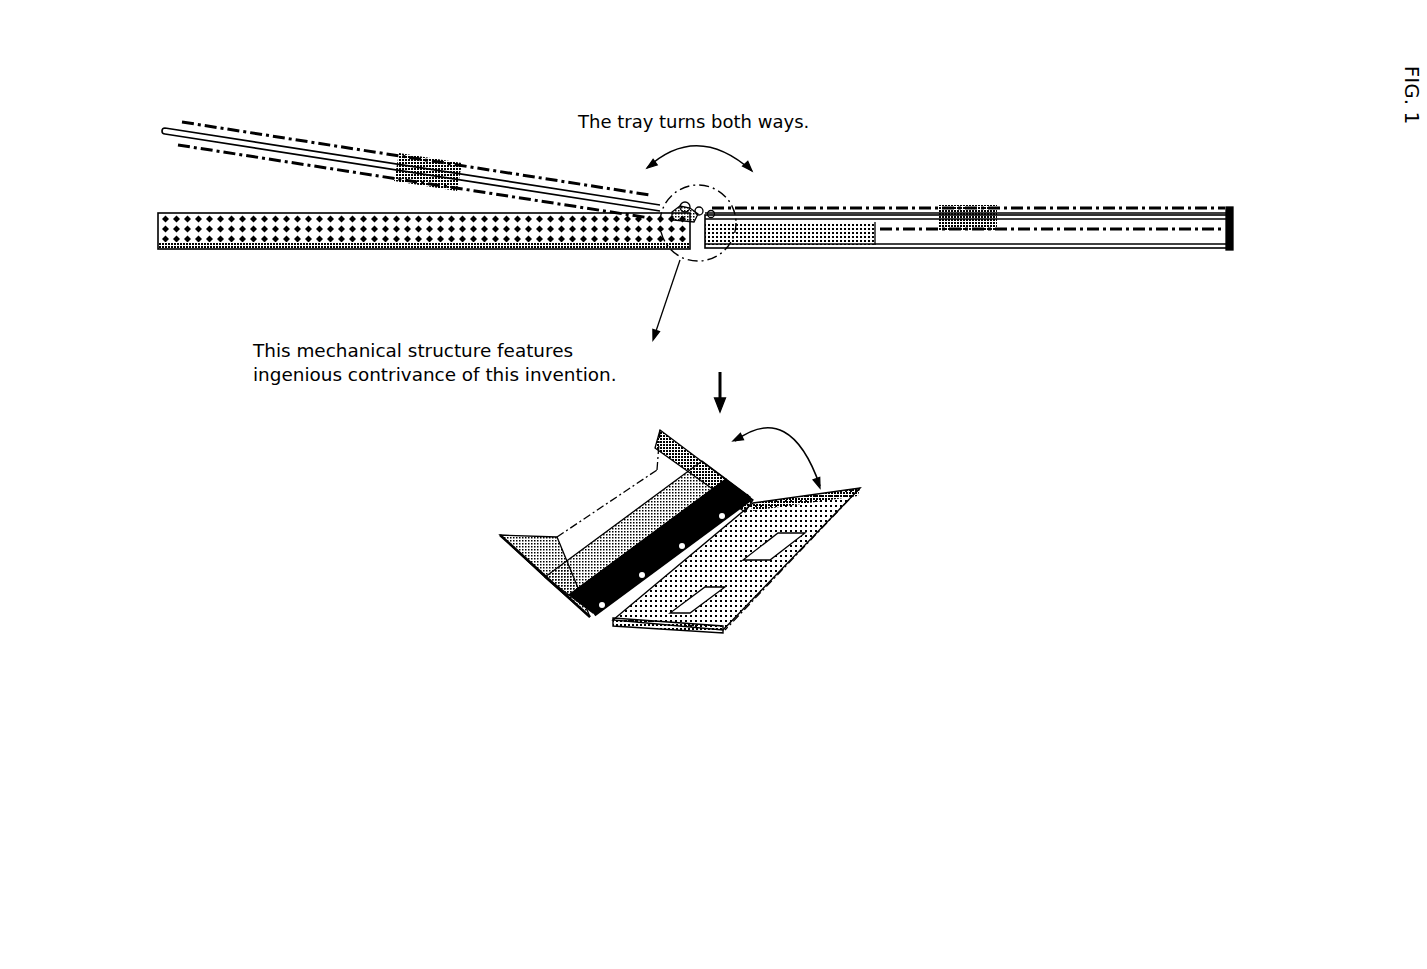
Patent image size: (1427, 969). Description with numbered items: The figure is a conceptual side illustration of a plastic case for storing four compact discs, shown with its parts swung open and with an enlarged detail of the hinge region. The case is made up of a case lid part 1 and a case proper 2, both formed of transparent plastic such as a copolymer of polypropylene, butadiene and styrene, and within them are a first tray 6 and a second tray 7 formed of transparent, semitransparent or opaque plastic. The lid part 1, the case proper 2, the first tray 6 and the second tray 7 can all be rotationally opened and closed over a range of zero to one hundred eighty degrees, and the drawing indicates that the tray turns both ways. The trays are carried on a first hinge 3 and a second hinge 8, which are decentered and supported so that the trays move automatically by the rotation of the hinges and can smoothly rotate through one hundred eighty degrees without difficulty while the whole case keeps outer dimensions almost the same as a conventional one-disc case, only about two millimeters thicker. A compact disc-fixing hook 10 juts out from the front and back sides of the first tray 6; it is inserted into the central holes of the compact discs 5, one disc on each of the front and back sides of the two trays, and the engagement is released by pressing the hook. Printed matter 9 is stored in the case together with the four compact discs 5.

The case lid part 1 is at (405, 276).
The case proper 2 is at (981, 277).
The first hinge 3 is at (593, 616).
The compact disc 5 is at (326, 138).
The first tray 6 is at (258, 134).
The second tray 7 is at (1148, 210).
The second hinge 8 is at (624, 628).
The printed matter 9 is at (286, 252).
The compact disc-fixing hook 10 is at (442, 156).